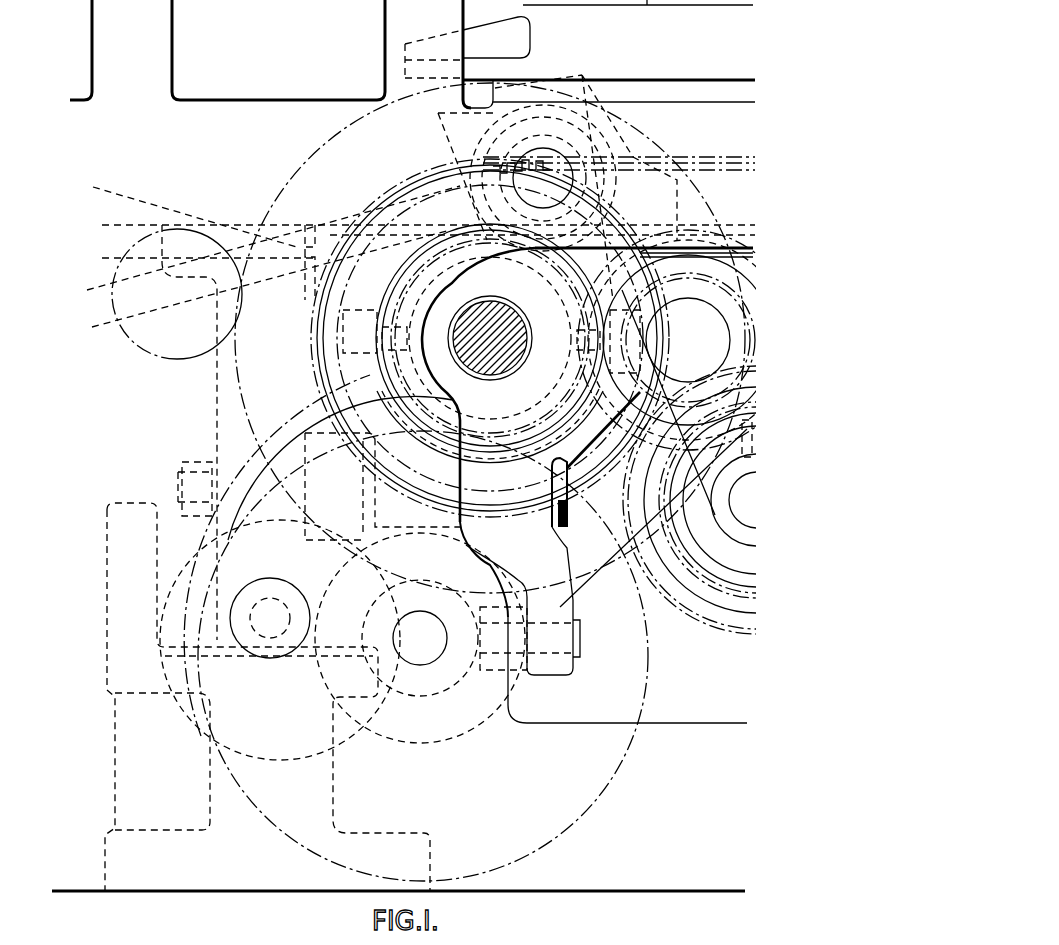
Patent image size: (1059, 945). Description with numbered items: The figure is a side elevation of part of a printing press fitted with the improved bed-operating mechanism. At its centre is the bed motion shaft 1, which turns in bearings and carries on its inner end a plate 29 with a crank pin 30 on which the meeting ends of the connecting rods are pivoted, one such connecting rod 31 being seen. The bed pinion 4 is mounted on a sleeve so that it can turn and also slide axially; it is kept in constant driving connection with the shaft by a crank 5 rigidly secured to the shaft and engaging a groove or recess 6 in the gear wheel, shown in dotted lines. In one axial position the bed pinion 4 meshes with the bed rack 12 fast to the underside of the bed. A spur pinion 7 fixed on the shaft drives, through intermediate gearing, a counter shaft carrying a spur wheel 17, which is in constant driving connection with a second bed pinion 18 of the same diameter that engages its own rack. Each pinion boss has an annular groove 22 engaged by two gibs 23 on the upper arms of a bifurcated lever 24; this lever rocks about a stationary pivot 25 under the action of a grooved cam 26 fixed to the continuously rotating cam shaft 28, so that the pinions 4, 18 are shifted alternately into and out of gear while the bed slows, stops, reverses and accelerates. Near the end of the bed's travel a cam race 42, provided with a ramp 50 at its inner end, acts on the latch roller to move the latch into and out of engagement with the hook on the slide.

The bed motion shaft 1 is at (499, 341).
The bed pinion 4 is at (578, 491).
The bed pinion 18 is at (578, 491).
The crank 5 is at (499, 465).
The groove or recess 6 is at (474, 469).
The spur pinion 7 is at (595, 283).
The bed rack 12 is at (728, 161).
The spur wheel 17 is at (727, 636).
The annular groove 22 is at (418, 296).
The gibs 23 is at (405, 336).
The bifurcated lever 24 is at (570, 427).
The stationary pivot 25 is at (569, 522).
The grooved cam 26 is at (521, 681).
The cam shaft 28 is at (423, 643).
The plate 29 is at (465, 196).
The crank pin 30 is at (569, 142).
The connecting rod 31 is at (272, 231).
The cam race 42 is at (85, 207).
The ramp 50 is at (742, 238).